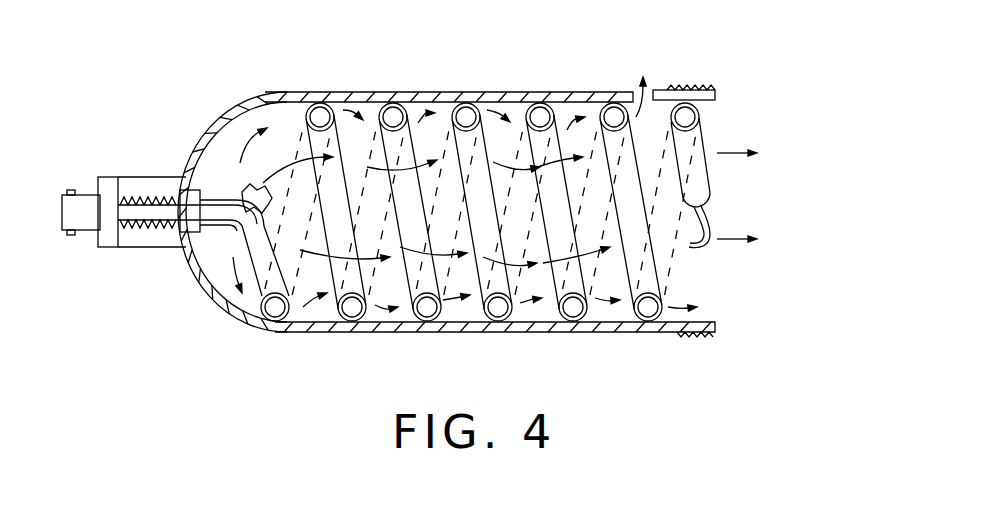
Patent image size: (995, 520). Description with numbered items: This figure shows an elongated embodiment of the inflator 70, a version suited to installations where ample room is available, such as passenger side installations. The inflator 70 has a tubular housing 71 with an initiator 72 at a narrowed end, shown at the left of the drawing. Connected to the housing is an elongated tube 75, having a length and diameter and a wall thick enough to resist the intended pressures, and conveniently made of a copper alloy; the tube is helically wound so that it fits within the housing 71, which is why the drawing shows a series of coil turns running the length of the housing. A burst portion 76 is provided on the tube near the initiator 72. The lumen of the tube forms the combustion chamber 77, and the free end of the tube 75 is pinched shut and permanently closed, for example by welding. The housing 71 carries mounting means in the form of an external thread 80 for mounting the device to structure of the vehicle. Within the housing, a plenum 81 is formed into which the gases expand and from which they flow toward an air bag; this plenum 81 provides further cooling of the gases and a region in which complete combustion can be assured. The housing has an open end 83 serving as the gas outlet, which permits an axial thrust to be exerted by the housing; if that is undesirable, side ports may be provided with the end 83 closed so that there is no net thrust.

The inflator 70 is at (470, 206).
The tubular housing 71 is at (270, 333).
The initiator 72 is at (127, 247).
The elongated tube 75 is at (707, 140).
The burst portion 76 is at (260, 184).
The combustion chamber 77 is at (510, 332).
The external thread 80 is at (690, 91).
The plenum 81 is at (213, 153).
The open end 83 is at (710, 287).